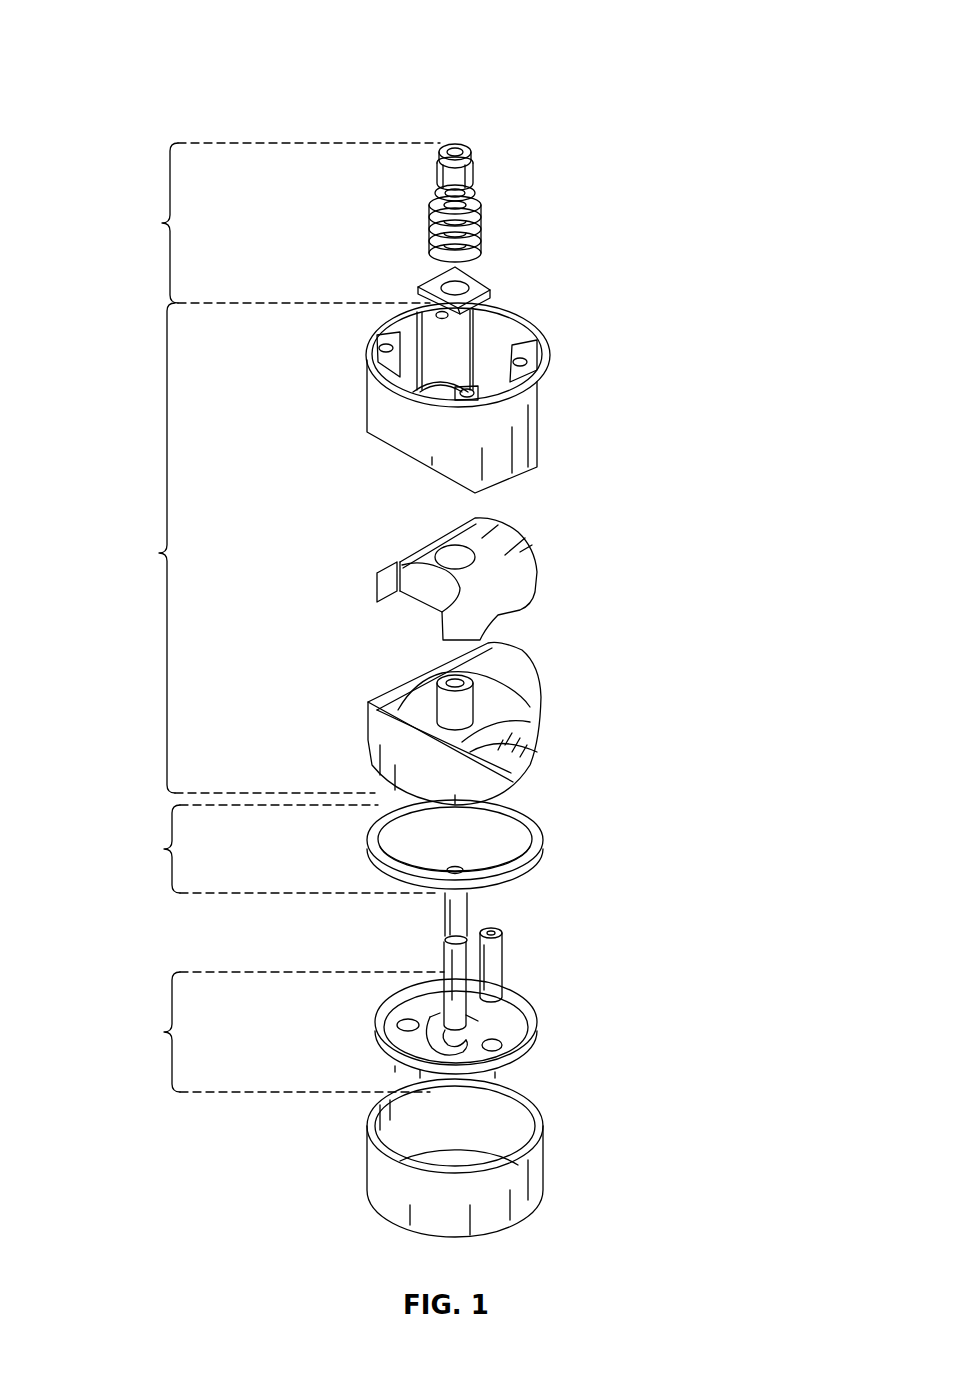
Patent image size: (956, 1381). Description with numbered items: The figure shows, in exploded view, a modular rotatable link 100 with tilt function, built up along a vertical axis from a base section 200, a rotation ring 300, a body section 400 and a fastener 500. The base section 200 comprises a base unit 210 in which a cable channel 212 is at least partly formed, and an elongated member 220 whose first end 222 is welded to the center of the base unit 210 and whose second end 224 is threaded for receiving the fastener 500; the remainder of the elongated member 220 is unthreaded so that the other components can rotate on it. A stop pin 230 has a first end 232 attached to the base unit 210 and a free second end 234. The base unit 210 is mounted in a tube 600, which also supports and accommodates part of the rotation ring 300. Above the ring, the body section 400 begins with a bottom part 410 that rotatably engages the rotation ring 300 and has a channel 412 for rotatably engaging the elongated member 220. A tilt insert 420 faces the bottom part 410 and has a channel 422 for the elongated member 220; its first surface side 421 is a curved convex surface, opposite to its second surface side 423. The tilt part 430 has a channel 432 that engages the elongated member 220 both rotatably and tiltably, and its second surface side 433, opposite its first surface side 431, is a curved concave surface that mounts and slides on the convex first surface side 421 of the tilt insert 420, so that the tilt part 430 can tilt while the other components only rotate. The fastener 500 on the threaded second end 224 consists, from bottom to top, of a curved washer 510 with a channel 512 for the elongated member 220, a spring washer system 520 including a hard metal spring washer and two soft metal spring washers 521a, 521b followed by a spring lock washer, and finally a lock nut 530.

The modular rotatable link 100 is at (188, 30).
The base section 200 is at (281, 1032).
The base unit 210 is at (520, 1062).
The cable channel 212 is at (420, 1060).
The elongated member 220 is at (446, 990).
The first end 222 is at (472, 1012).
The second end 224 is at (462, 912).
The stop pin 230 is at (505, 965).
The first end 232 is at (503, 998).
The second end 234 is at (494, 930).
The rotation ring 300 is at (330, 846).
The body section 400 is at (234, 548).
The bottom part 410 is at (520, 750).
The channel 412 is at (465, 710).
The tilt insert 420 is at (528, 578).
The first surface side 421 is at (512, 556).
The channel 422 is at (452, 560).
The second surface side 423 is at (409, 606).
The tilt part 430 is at (525, 443).
The first surface side 431 is at (535, 363).
The channel 432 is at (385, 348).
The second surface side 433 is at (436, 480).
The fastener 500 is at (274, 223).
The curved washer 510 is at (440, 284).
The channel 512 is at (470, 291).
The spring washer system 520 is at (478, 190).
The spring washer 521a is at (460, 205).
The spring washer 521b is at (480, 238).
The lock nut 530 is at (458, 148).
The tube 600 is at (525, 1195).